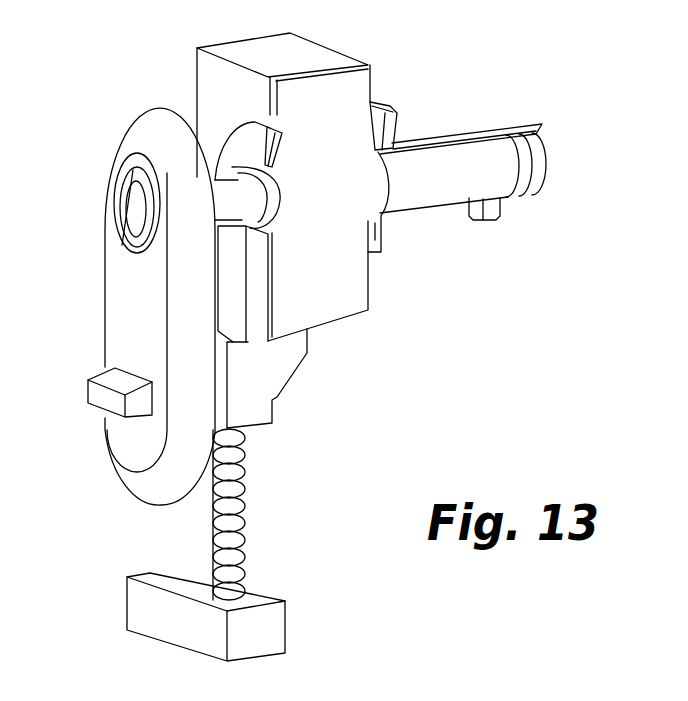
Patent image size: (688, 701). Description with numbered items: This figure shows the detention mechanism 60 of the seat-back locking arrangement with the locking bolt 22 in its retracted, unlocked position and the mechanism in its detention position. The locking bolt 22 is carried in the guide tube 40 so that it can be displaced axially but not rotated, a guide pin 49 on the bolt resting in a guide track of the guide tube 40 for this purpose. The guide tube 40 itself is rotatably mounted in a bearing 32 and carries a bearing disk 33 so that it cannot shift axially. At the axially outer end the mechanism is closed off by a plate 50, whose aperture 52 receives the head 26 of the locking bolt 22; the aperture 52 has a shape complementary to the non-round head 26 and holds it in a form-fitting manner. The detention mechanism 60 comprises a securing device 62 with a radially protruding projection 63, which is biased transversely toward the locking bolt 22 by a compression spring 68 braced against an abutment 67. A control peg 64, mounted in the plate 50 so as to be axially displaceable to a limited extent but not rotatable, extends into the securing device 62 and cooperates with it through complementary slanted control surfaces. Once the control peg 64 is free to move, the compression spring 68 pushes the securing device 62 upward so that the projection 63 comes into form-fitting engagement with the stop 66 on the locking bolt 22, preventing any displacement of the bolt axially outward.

The locking bolt 22 is at (238, 195).
The head 26 is at (132, 197).
The bearing 32 is at (300, 53).
The bearing disk 33 is at (395, 110).
The guide tube 40 is at (463, 134).
The guide pin 49 is at (470, 205).
The plate 50 is at (122, 313).
The aperture 52 is at (112, 227).
The detention mechanism 60 is at (299, 408).
The securing device 62 is at (278, 362).
The projection 63 is at (258, 283).
The control peg 64 is at (100, 397).
The stop 66 is at (270, 183).
The abutment 67 is at (262, 600).
The compression spring 68 is at (250, 518).